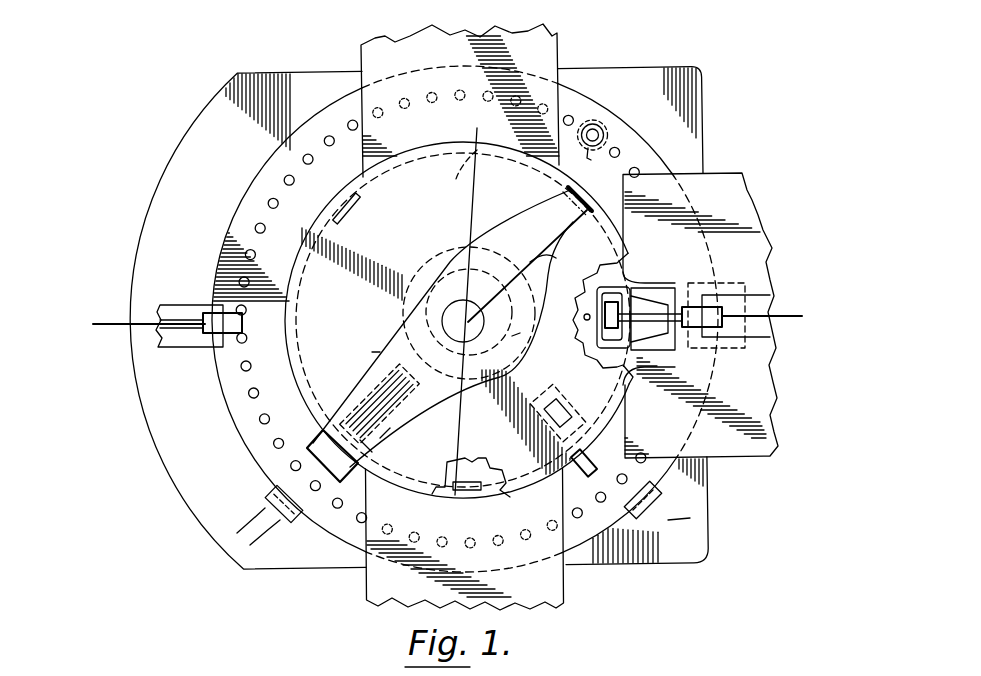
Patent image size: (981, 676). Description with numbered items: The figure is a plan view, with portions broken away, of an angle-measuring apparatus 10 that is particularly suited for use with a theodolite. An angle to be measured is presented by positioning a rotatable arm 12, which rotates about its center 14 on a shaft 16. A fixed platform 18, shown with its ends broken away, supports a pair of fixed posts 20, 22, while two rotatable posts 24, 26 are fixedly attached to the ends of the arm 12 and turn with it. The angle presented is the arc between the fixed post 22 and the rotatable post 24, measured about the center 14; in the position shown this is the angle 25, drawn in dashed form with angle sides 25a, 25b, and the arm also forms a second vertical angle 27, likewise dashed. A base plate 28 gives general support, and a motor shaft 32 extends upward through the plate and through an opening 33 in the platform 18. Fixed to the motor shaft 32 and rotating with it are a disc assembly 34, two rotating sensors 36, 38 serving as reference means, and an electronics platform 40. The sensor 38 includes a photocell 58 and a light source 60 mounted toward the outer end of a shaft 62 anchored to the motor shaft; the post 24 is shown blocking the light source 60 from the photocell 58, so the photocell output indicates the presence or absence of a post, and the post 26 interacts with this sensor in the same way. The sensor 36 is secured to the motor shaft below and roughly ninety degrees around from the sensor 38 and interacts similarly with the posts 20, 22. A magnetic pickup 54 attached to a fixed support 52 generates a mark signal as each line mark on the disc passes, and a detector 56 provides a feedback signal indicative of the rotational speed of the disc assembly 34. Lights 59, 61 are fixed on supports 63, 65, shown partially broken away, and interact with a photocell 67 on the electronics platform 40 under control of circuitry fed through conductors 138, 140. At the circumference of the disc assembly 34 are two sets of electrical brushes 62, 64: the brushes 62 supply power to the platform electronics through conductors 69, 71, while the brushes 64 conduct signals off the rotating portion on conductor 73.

The angle-measuring apparatus 10 is at (775, 79).
The rotatable arm 12 is at (515, 232).
The center 14 is at (468, 306).
The shaft 16 is at (450, 333).
The fixed platform 18 is at (548, 56).
The fixed post 20 is at (451, 181).
The fixed post 22 is at (468, 480).
The rotatable post 24 is at (354, 394).
The angle 25 is at (470, 418).
The angle side 25a is at (372, 352).
The angle side 25b is at (513, 336).
The rotatable post 26 is at (553, 194).
The angle 27 is at (533, 254).
The base plate 28 is at (192, 152).
The motor shaft 32 is at (378, 344).
The opening 33 is at (420, 262).
The disc assembly 34 is at (331, 86).
The rotating sensor 36 is at (572, 478).
The rotating sensor 38 is at (370, 492).
The electronics platform 40 is at (318, 214).
The fixed support 52 is at (735, 200).
The magnetic pickup 54 is at (683, 288).
The detector 56 is at (594, 152).
The photocell 58 is at (315, 450).
The light 59 is at (232, 312).
The light source 60 is at (366, 445).
The light 61 is at (712, 307).
The electrical brushes 62 is at (382, 442).
The support 63 is at (165, 345).
The electrical brushes 64 is at (665, 492).
The support 65 is at (772, 300).
The photocell 67 is at (361, 200).
The conductor 69 is at (250, 527).
The conductor 71 is at (264, 530).
The conductor 73 is at (668, 520).
The conductor 138 is at (790, 317).
The conductor 140 is at (113, 322).